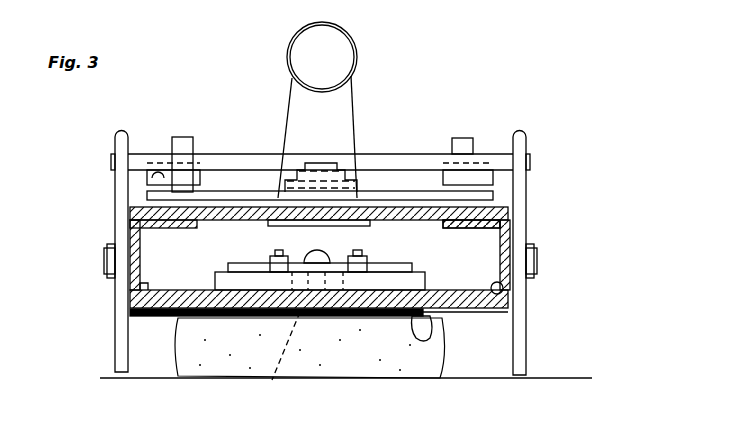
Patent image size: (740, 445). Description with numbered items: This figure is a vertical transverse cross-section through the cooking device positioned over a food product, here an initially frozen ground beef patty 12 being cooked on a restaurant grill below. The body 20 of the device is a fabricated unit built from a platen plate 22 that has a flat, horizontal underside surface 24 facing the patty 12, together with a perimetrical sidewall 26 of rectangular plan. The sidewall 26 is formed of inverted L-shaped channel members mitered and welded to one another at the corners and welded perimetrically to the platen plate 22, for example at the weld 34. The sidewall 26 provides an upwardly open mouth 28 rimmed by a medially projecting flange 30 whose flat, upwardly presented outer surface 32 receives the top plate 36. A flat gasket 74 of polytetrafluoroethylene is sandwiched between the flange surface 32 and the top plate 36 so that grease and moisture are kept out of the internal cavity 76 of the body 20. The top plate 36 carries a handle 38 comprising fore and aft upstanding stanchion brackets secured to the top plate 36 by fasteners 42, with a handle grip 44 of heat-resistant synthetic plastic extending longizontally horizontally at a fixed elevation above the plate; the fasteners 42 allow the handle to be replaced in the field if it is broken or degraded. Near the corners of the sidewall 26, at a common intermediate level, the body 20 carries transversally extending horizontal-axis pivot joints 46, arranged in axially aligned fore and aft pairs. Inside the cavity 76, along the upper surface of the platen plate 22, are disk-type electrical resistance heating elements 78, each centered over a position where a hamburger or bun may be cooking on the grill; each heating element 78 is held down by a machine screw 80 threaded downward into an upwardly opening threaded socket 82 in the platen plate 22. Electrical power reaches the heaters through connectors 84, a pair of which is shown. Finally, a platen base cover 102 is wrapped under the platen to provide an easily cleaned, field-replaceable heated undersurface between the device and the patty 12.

The patty 12 is at (198, 363).
The body 20 is at (295, 261).
The platen plate 22 is at (489, 304).
The underside surface 24 is at (432, 335).
The perimetrical sidewall 26 is at (510, 238).
The upwardly open mouth 28 is at (444, 222).
The flange 30 is at (480, 210).
The outer surface 32 is at (135, 212).
The weld 34 is at (143, 286).
The top plate 36 is at (407, 212).
The handle 38 is at (359, 52).
The fasteners 42 is at (271, 198).
The handle grip 44 is at (341, 30).
The pivot joints 46 is at (103, 258).
The gasket 74 is at (512, 218).
The internal cavity 76 is at (216, 233).
The heating elements 78 is at (423, 280).
The machine screw 80 is at (305, 255).
The threaded socket 82 is at (268, 382).
The connectors 84 is at (359, 278).
The platen base cover 102 is at (147, 316).